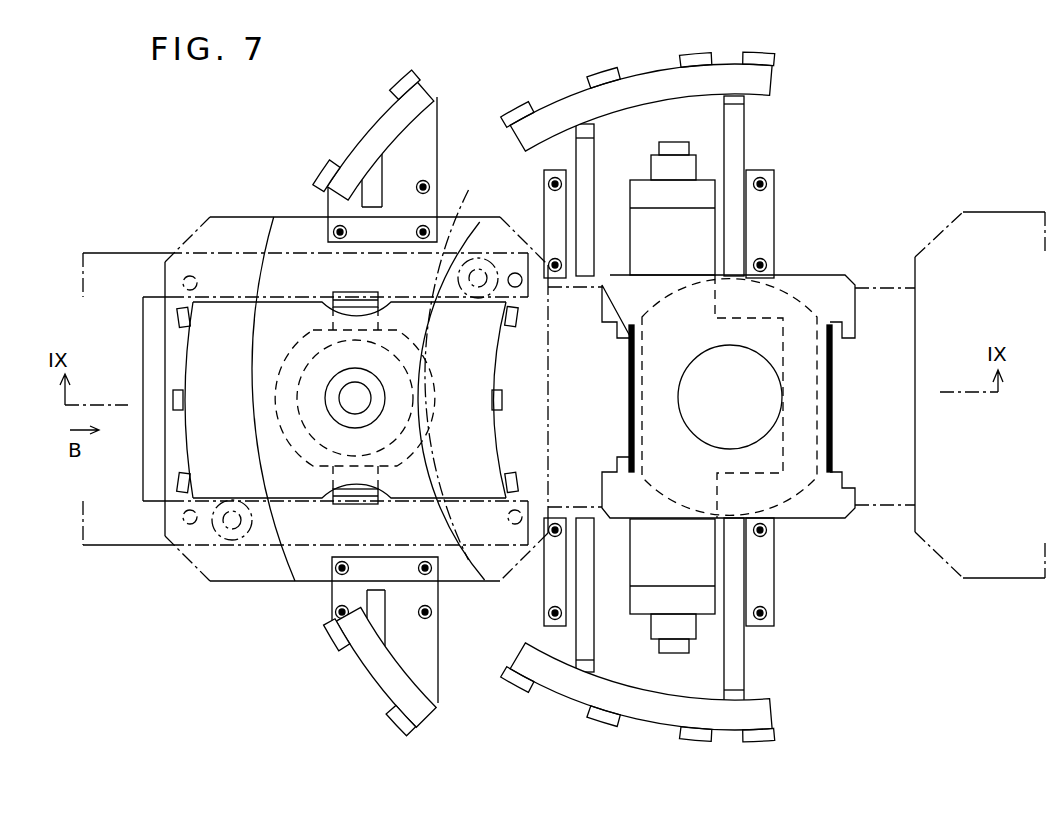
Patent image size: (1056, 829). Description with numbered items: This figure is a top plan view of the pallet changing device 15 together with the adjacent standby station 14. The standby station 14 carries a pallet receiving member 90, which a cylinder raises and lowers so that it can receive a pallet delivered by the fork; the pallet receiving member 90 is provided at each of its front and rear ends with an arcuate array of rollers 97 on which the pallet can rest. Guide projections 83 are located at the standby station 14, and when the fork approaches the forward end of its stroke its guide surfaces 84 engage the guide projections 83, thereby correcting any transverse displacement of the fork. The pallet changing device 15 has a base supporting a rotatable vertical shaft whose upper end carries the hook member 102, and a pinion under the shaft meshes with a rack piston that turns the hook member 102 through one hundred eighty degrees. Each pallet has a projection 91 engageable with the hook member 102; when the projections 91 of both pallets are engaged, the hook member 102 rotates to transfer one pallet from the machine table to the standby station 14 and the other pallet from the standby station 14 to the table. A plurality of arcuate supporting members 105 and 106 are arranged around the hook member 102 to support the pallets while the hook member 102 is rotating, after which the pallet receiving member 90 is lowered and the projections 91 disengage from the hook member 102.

The standby station 14 is at (292, 203).
The pallet changing device 15 is at (837, 268).
The guide projections 83 is at (352, 296).
The guide surfaces 84 is at (374, 294).
The pallet receiving member 90 is at (233, 313).
The projection 91 is at (588, 278).
The rollers 97 is at (175, 396).
The hook member 102 is at (790, 275).
The arcuate supporting members 105 is at (415, 92).
The arcuate supporting members 106 is at (648, 83).